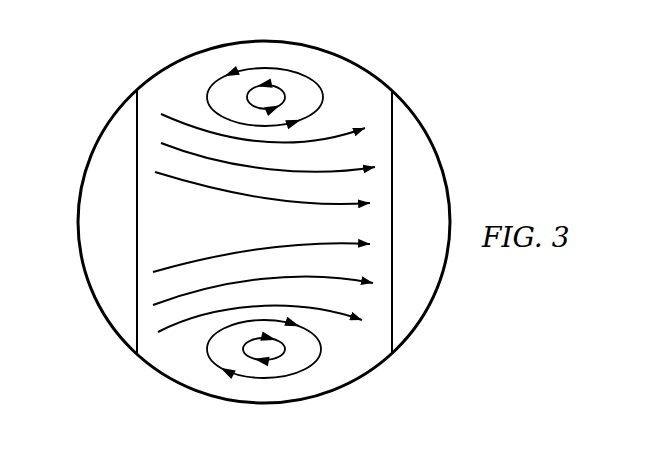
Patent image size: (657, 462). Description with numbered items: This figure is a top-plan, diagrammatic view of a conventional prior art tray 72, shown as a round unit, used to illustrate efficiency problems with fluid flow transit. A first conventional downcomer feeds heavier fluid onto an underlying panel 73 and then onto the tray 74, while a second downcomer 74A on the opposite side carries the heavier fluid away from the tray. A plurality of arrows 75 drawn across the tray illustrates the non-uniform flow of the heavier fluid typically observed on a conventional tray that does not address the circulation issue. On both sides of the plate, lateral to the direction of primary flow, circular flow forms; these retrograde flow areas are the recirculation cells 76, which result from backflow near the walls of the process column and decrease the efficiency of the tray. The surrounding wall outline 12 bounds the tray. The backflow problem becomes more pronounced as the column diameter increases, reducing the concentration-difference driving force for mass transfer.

The pipe wall 12 is at (432, 143).
The prior art tray 72 is at (342, 80).
The underlying panel 73 is at (108, 278).
The tray 74 is at (185, 232).
The second downcomer 74A is at (420, 280).
The arrows 75 is at (161, 143).
The recirculation cells 76 is at (247, 107).